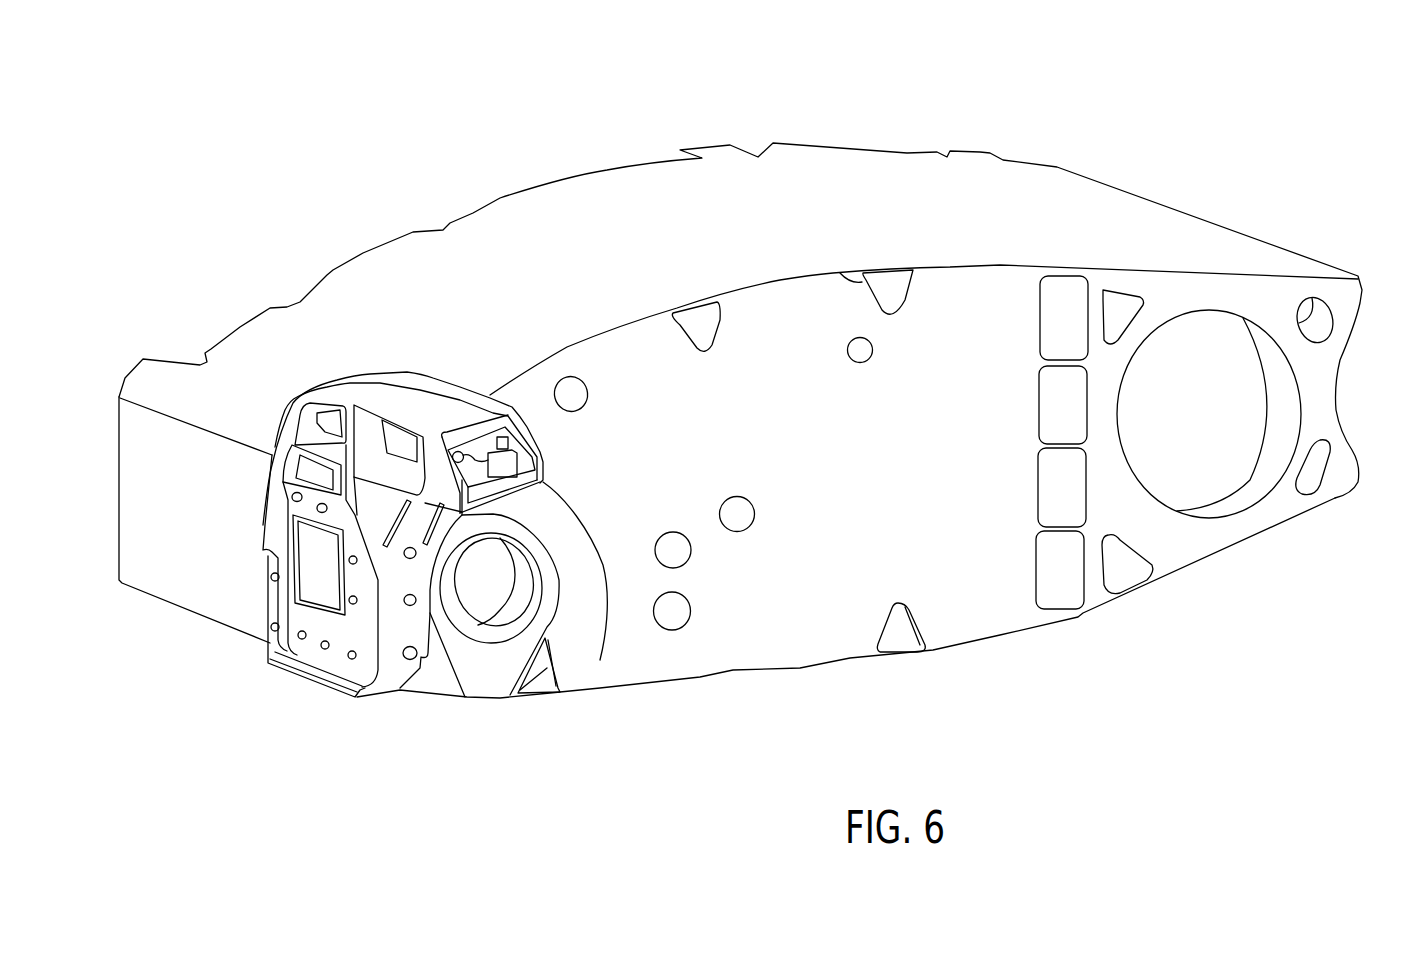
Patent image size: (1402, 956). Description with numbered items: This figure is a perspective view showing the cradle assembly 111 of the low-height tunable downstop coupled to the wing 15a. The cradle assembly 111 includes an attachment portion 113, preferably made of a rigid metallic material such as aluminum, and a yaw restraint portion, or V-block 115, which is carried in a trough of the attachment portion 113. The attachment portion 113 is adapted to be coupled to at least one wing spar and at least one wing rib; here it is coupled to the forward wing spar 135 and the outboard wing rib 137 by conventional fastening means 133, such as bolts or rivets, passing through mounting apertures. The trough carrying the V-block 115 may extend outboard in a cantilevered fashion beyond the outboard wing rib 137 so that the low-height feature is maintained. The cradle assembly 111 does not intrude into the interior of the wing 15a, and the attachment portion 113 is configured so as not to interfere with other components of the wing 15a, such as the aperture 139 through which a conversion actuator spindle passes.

The wing 15a is at (1152, 170).
The cradle assembly 111 is at (363, 335).
The attachment portion 113 is at (422, 377).
The V-block 115 is at (600, 660).
The fastening means 133 is at (410, 660).
The forward wing spar 135 is at (127, 590).
The outboard wing rib 137 is at (1003, 632).
The aperture 139 is at (497, 578).